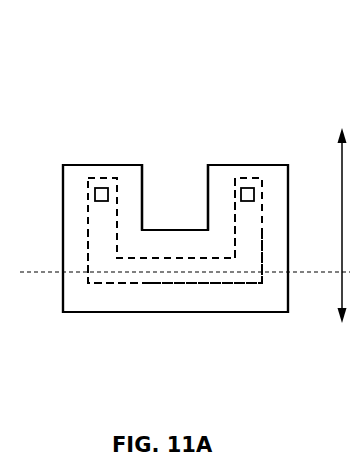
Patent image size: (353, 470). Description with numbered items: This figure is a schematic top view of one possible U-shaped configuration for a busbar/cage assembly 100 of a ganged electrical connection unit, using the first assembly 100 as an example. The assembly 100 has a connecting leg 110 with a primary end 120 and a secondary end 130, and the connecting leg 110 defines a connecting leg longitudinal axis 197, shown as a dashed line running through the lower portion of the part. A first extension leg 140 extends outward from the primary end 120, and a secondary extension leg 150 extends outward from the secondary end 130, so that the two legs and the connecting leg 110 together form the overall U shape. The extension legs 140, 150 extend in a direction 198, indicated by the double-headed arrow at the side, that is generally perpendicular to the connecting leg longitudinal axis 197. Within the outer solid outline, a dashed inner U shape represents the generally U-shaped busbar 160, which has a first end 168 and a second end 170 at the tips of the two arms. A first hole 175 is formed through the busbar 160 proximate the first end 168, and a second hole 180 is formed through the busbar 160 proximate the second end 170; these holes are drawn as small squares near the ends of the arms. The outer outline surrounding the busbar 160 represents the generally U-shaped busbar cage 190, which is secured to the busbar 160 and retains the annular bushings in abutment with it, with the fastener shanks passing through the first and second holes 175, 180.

The first busbar/cage assembly 100 is at (142, 72).
The connecting leg 110 is at (165, 300).
The primary end 120 is at (110, 280).
The secondary end 130 is at (237, 280).
The first extension leg 140 is at (132, 202).
The secondary extension leg 150 is at (222, 202).
The busbar 160 is at (188, 285).
The first end 168 is at (105, 178).
The second end 170 is at (235, 178).
The first hole 175 is at (95, 190).
The second hole 180 is at (258, 182).
The busbar cage 190 is at (143, 312).
The connecting leg longitudinal axis 197 is at (313, 273).
The direction 198 is at (340, 188).